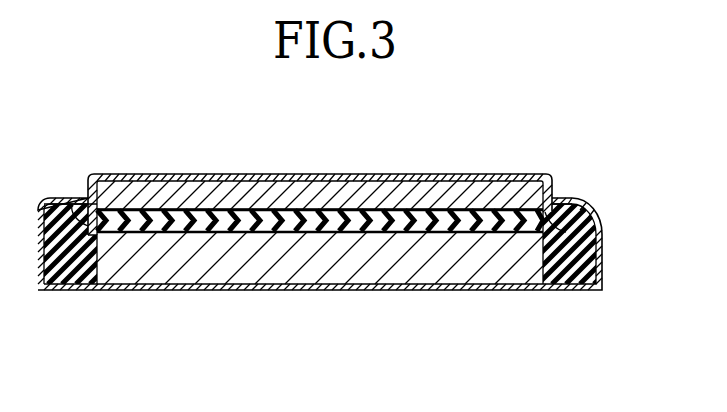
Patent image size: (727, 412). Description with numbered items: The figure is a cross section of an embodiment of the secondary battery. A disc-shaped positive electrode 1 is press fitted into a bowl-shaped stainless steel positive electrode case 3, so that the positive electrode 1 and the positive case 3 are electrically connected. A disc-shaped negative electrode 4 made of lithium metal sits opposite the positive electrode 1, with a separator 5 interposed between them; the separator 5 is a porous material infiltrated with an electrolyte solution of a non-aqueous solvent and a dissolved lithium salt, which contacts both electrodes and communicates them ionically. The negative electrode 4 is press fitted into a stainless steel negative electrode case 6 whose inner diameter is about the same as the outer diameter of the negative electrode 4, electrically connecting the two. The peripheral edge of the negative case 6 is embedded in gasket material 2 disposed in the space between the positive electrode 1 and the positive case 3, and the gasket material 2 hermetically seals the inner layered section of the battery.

The positive electrode 1 is at (302, 255).
The gasket material 2 is at (583, 262).
The positive electrode case 3 is at (416, 288).
The negative electrode 4 is at (221, 192).
The separator 5 is at (183, 217).
The negative electrode case 6 is at (383, 177).